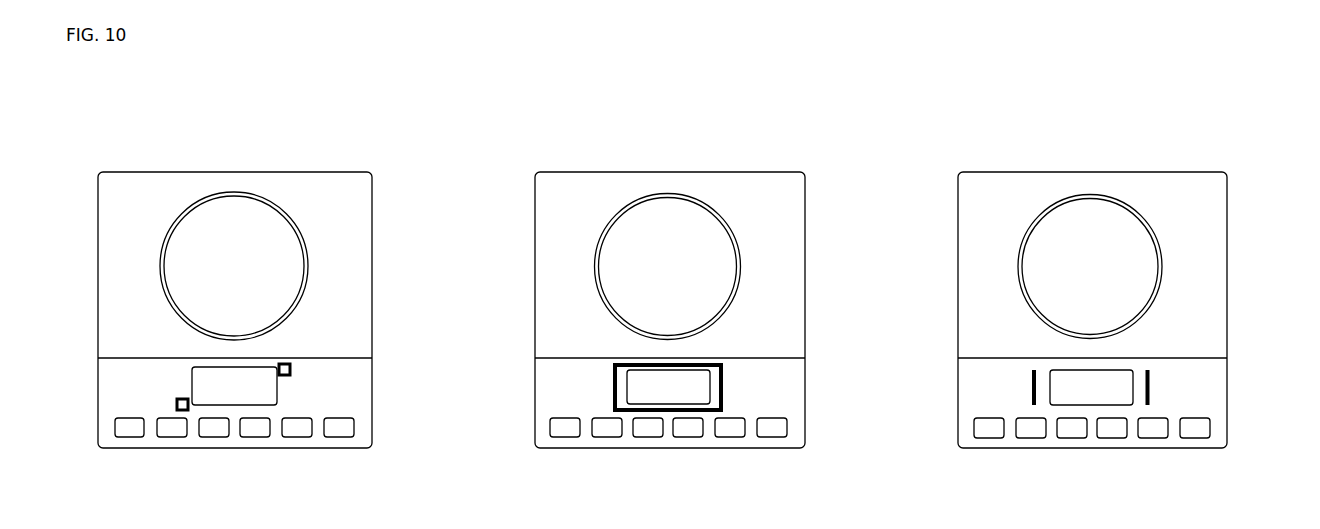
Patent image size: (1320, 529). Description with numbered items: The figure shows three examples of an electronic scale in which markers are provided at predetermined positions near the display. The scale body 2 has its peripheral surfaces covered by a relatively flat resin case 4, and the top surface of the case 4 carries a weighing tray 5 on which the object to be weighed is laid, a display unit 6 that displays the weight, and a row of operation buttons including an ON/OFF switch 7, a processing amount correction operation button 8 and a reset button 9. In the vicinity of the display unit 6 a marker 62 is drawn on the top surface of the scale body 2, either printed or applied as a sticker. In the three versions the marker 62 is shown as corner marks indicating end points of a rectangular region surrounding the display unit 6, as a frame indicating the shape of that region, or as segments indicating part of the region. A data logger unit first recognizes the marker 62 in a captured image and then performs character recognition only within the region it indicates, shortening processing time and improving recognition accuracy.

The scale body 2 is at (222, 153).
The case 4 is at (372, 275).
The weighing tray 5 is at (275, 243).
The display unit 6 is at (192, 377).
The marker 62 is at (177, 403).
The ON/OFF switch 7 is at (130, 432).
The processing amount correction operation button 8 is at (216, 433).
The reset button 9 is at (173, 433).